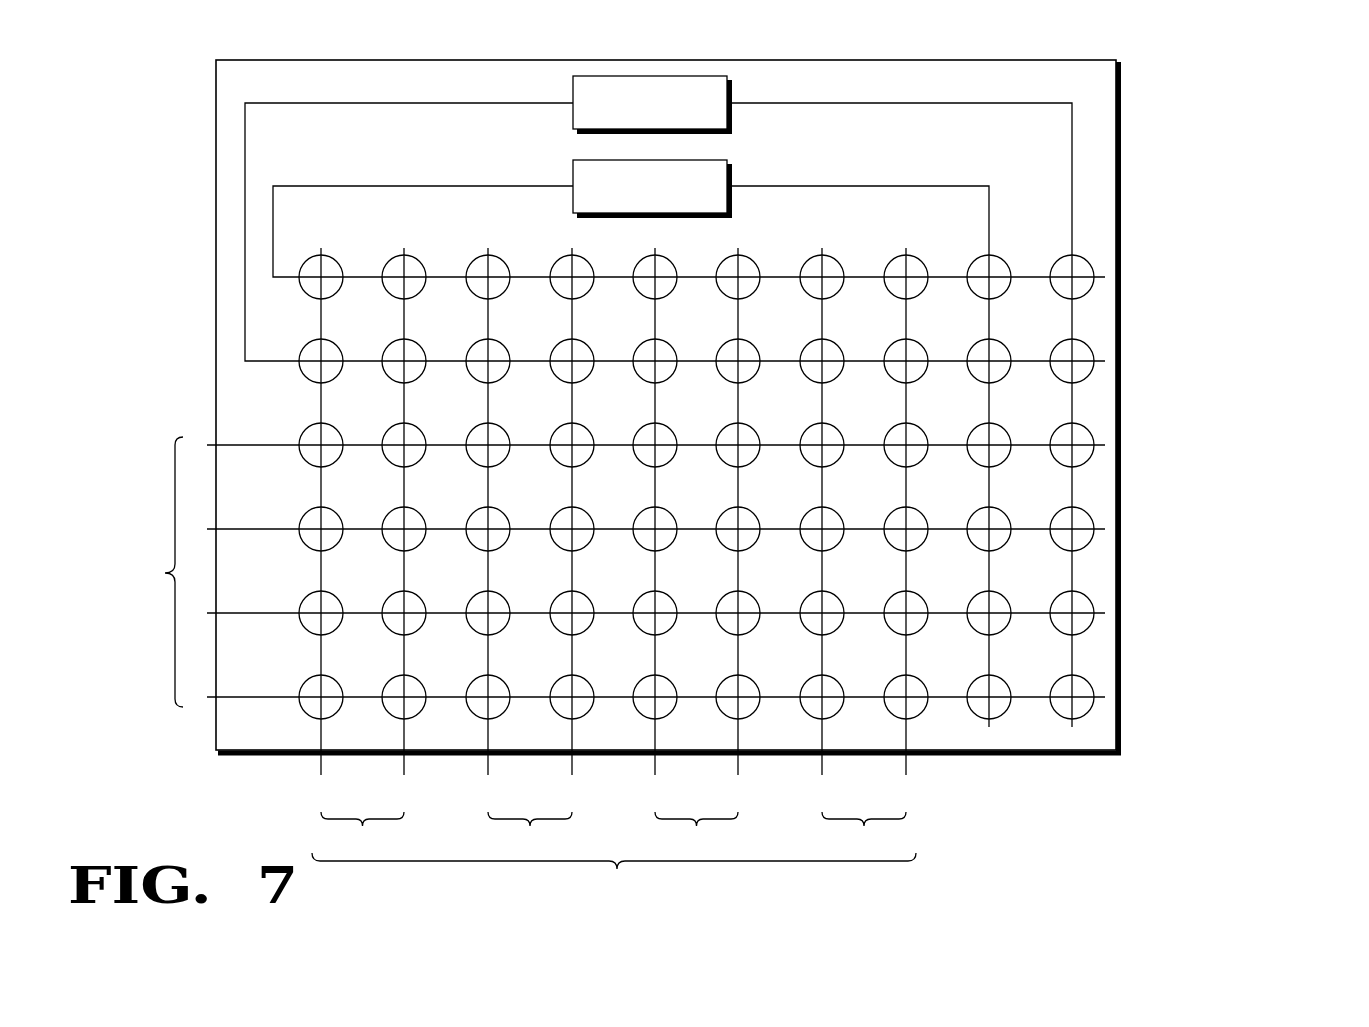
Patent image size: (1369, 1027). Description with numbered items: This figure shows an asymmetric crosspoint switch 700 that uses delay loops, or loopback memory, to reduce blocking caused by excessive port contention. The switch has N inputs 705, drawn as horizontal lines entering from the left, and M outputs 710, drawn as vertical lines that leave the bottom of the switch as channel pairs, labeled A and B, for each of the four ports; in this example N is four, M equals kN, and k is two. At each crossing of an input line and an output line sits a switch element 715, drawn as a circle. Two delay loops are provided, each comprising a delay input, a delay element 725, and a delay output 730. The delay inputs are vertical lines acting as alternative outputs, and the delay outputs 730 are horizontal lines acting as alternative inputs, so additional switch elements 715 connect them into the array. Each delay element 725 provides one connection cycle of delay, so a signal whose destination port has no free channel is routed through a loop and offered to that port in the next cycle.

The asymmetric crosspoint switch 700 is at (1222, 117).
The inputs 705 is at (588, 571).
The outputs 710 is at (614, 572).
The switch element 715 is at (1092, 515).
The delay element 725 is at (652, 146).
The delay output 730 is at (278, 105).